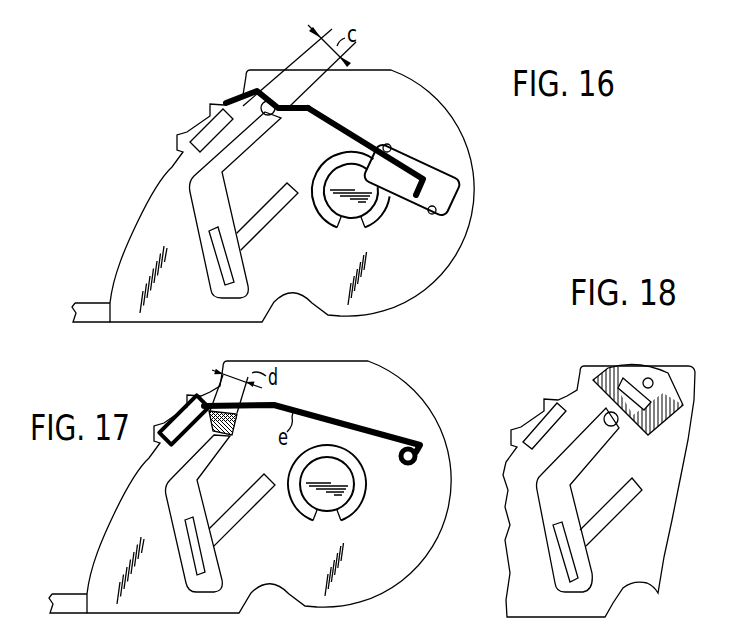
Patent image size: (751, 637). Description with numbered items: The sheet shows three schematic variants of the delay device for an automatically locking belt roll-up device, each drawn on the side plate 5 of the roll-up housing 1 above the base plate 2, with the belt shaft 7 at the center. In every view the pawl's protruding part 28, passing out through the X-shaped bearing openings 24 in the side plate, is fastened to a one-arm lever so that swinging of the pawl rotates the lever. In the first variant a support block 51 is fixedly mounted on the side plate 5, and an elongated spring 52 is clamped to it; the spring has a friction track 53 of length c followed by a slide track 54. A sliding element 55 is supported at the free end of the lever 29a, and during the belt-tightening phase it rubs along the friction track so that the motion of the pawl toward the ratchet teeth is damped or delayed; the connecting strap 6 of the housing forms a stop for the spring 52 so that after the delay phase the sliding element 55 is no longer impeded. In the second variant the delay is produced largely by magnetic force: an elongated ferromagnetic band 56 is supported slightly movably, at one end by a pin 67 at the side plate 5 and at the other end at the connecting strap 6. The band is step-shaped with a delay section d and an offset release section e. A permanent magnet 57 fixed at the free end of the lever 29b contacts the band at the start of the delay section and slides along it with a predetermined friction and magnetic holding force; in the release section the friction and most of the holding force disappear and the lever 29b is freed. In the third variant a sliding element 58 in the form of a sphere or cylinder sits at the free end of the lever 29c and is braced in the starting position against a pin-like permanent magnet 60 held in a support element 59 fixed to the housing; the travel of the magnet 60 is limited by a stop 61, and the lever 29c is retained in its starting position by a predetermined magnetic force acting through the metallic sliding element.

In FIG. 16, the roll-up housing 1 is at (316, 180).
In FIG. 17, the roll-up housing 1 is at (270, 477).
In FIG. 16, the base plate 2 is at (90, 310).
In FIG. 17, the base plate 2 is at (72, 603).
In FIG. 16, the side plate 5 is at (395, 84).
In FIG. 17, the side plate 5 is at (426, 414).
In FIG. 16, the connecting strap 6 is at (199, 135).
In FIG. 17, the connecting strap 6 is at (182, 421).
In FIG. 18, the connecting strap 6 is at (537, 428).
In FIG. 16, the belt shaft 7 is at (366, 208).
In FIG. 17, the belt shaft 7 is at (317, 503).
In FIG. 16, the bearing openings 24 is at (270, 212).
In FIG. 17, the bearing openings 24 is at (242, 508).
In FIG. 18, the bearing openings 24 is at (618, 503).
In FIG. 16, the protruding part of pawl 28 is at (218, 255).
In FIG. 17, the protruding part of pawl 28 is at (197, 552).
In FIG. 18, the protruding part of pawl 28 is at (571, 567).
In FIG. 16, the lever 29a is at (215, 205).
In FIG. 17, the lever 29b is at (183, 514).
In FIG. 18, the lever 29c is at (566, 500).
In FIG. 16, the support block 51 is at (448, 191).
In FIG. 16, the spring 52 is at (324, 143).
In FIG. 16, the friction track 53 is at (245, 92).
In FIG. 16, the slide track 54 is at (321, 130).
In FIG. 16, the sliding element 55 is at (267, 116).
In FIG. 17, the ferromagnetic band 56 is at (312, 444).
In FIG. 17, the permanent magnet 57 is at (232, 442).
In FIG. 18, the sliding element 58 is at (618, 425).
In FIG. 18, the support element 59 is at (655, 387).
In FIG. 18, the permanent magnet 60 is at (614, 379).
In FIG. 18, the stop 61 is at (648, 377).
In FIG. 17, the pin 67 is at (407, 466).